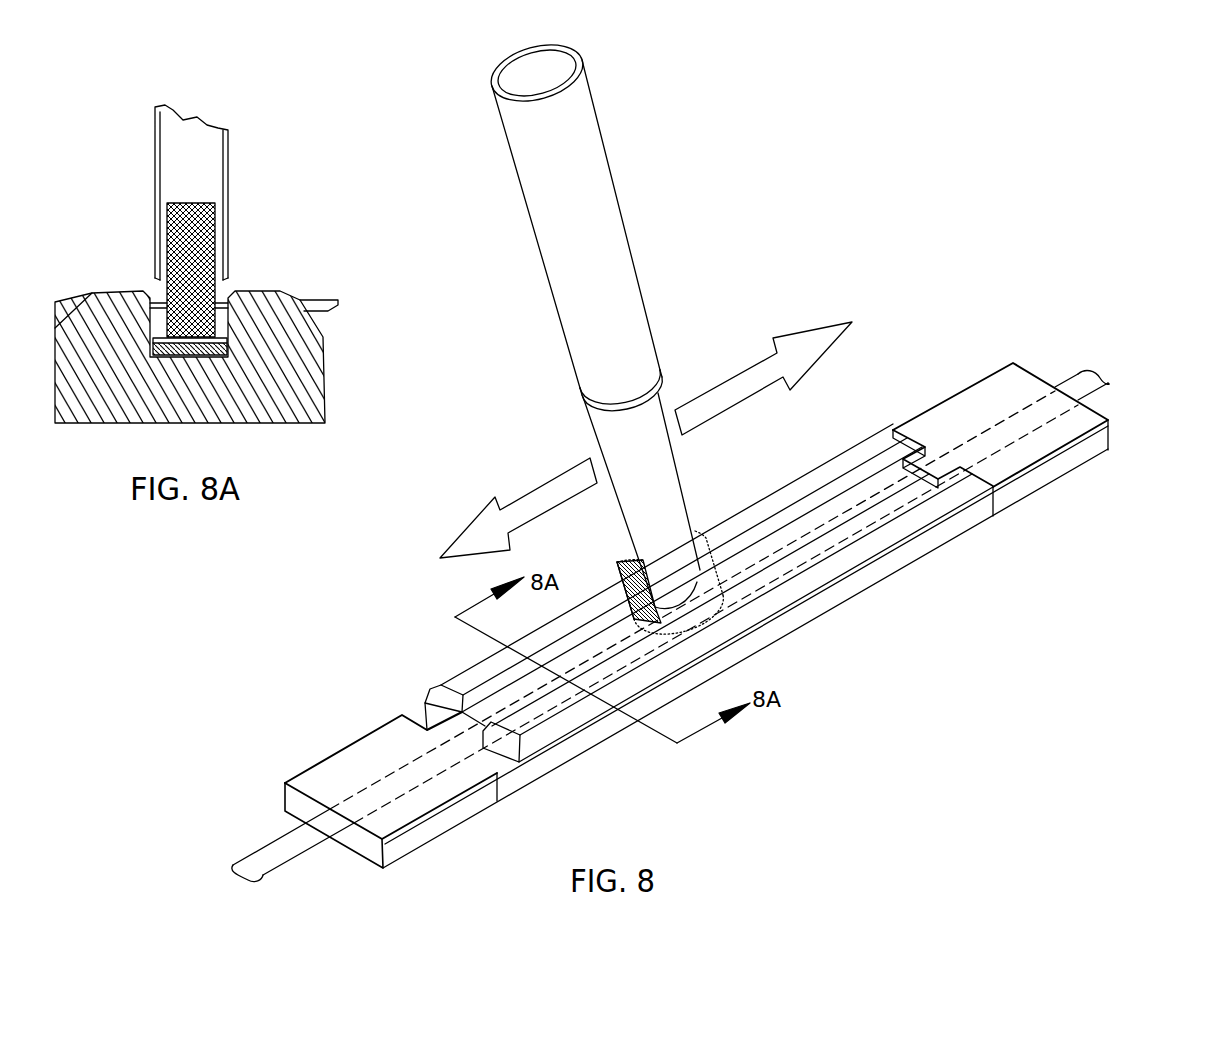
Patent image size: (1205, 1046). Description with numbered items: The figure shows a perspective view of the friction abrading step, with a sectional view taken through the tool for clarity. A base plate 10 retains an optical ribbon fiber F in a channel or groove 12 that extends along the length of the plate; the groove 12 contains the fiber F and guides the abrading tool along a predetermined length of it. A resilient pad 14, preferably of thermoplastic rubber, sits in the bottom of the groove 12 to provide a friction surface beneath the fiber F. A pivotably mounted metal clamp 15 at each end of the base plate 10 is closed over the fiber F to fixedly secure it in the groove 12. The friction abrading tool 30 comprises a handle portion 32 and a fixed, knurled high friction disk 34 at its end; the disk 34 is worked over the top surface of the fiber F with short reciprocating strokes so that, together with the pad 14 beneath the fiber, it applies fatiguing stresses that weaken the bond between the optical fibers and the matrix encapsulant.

In FIG. 8, the base plate 10 is at (671, 605).
In FIG. 8A, the groove 12 is at (225, 300).
In FIG. 8, the groove 12 is at (827, 496).
In FIG. 8A, the resilient pad 14 is at (180, 354).
In FIG. 8A, the clamp 15 is at (316, 298).
In FIG. 8, the clamp 15 is at (377, 767).
In FIG. 8, the friction abrading tool 30 is at (609, 321).
In FIG. 8, the handle portion 32 is at (599, 292).
In FIG. 8A, the high friction disk 34 is at (190, 202).
In FIG. 8, the high friction disk 34 is at (617, 558).
In FIG. 8A, the optical ribbon fiber F is at (158, 318).
In FIG. 8, the optical ribbon fiber F is at (782, 553).